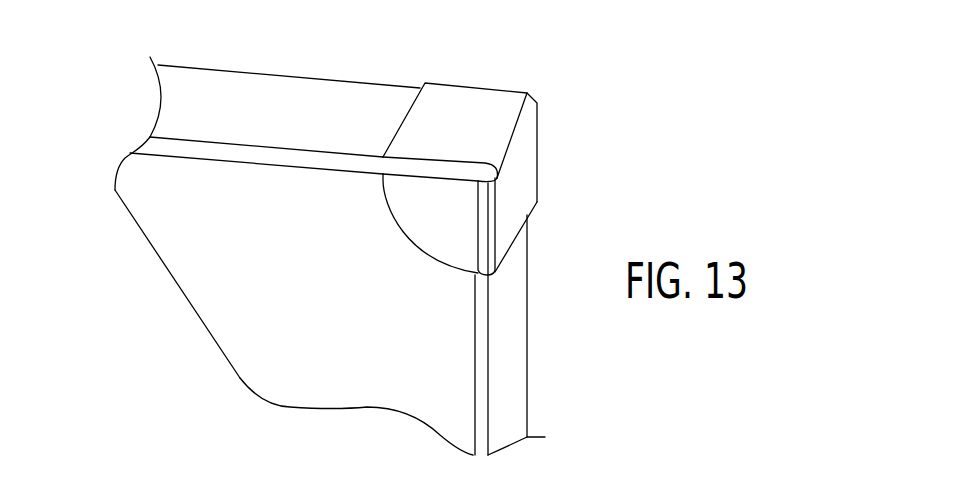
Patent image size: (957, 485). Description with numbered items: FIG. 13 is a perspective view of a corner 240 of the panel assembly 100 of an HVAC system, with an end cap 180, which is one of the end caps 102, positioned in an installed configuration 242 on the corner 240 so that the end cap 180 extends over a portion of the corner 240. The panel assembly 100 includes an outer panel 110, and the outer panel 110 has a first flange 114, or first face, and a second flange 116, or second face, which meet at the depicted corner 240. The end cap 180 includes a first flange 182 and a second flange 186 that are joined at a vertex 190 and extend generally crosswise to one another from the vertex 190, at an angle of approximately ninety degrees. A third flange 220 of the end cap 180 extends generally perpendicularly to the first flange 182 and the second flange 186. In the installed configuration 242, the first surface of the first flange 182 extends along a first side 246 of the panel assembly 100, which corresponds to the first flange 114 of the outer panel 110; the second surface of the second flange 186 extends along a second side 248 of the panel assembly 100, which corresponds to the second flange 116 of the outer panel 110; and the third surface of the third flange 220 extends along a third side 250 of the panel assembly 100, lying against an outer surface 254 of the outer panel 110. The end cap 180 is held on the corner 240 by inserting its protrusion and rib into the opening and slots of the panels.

The panel assembly 100 is at (205, 350).
The end caps 102 is at (544, 212).
The outer panel 110 is at (142, 212).
The first flange 114 is at (277, 107).
The second flange 116 is at (569, 319).
The end cap 180 is at (558, 179).
The first flange 182 is at (472, 93).
The second flange 186 is at (508, 225).
The vertex 190 is at (527, 108).
The third flange 220 is at (413, 213).
The corner 240 is at (667, 137).
The installed configuration 242 is at (560, 195).
The first side 246 is at (290, 85).
The second side 248 is at (512, 408).
The third side 250 is at (190, 262).
The outer surface 254 is at (342, 380).